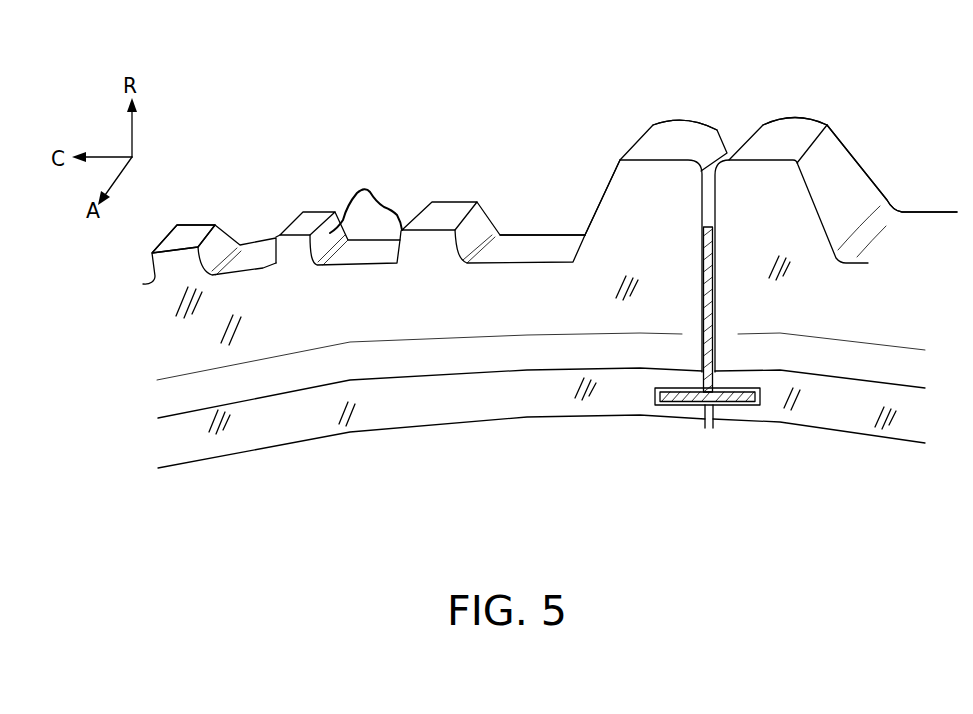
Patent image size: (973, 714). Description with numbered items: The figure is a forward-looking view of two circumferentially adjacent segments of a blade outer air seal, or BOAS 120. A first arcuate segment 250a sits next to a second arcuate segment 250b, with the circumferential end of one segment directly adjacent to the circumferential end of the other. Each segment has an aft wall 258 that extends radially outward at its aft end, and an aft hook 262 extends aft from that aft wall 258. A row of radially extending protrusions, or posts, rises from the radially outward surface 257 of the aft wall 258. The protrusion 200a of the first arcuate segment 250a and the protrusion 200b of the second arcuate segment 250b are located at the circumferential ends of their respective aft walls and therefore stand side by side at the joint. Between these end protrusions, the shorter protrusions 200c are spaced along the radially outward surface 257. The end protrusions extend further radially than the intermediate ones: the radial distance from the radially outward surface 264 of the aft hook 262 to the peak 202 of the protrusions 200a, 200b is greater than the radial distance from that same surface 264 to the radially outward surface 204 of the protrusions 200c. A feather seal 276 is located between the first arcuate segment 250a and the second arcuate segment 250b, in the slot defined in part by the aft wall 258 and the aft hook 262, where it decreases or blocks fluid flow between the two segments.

The BOAS 120 is at (238, 72).
The first arcuate segment 250a is at (396, 161).
The second arcuate segment 250b is at (908, 153).
The radially outward surface of protrusions 200c 204 is at (193, 224).
The protrusions 200c is at (212, 249).
The radially outward surface of aft wall 257 is at (551, 253).
The protrusion 200a is at (676, 210).
The protrusion 200b is at (778, 210).
The radially outward surface of protrusions 200a and 200b 202 is at (682, 150).
The feather seal 276 is at (713, 428).
The aft wall 258 is at (293, 317).
The radially outward surface of aft hook 264 is at (318, 381).
The aft hook 262 is at (527, 393).